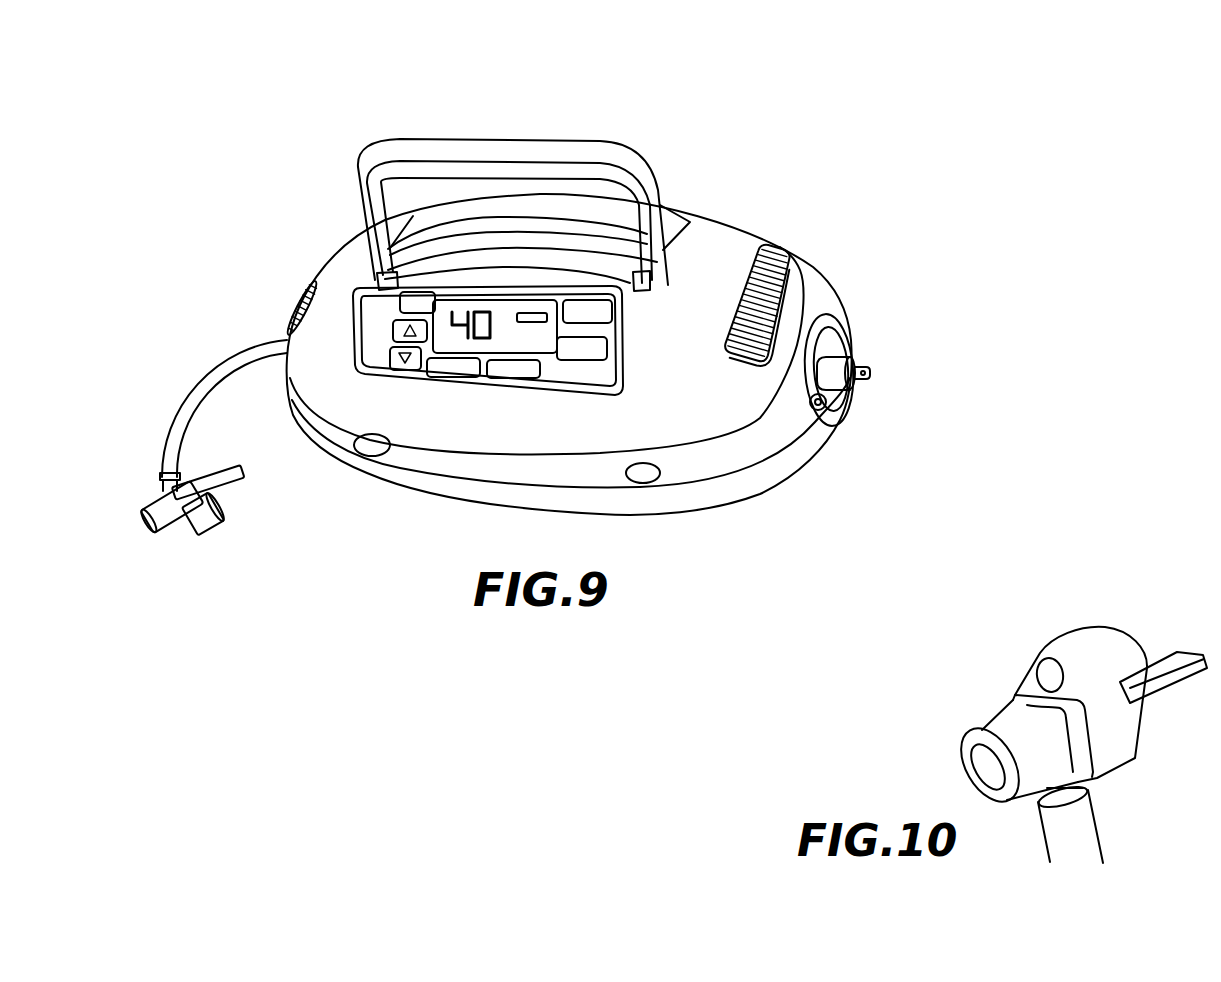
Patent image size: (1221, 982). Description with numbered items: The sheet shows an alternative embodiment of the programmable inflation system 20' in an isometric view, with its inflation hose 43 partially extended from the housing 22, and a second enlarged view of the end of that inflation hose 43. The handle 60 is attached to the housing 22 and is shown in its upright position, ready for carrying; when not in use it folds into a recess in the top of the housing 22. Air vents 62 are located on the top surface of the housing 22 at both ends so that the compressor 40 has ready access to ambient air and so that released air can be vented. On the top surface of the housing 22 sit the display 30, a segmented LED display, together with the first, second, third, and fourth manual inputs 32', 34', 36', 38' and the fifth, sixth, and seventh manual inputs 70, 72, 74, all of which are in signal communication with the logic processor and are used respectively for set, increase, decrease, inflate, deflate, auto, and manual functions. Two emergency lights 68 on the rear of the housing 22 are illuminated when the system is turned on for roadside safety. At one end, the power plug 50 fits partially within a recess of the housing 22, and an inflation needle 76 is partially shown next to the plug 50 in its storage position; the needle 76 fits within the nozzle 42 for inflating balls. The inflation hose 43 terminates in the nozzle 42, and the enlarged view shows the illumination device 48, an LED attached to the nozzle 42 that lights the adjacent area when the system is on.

In FIG. 9, the programmable inflation system 20' is at (160, 181).
In FIG. 9, the housing 22 is at (722, 223).
In FIG. 9, the display 30 is at (537, 343).
In FIG. 9, the first manual input 32' is at (376, 298).
In FIG. 9, the second manual input 34' is at (368, 328).
In FIG. 9, the third manual input 36' is at (362, 357).
In FIG. 9, the fourth manual input 38' is at (625, 317).
In FIG. 9, the compressor 40 is at (495, 326).
In FIG. 9, the nozzle 42 is at (157, 520).
In FIG. 10, the nozzle 42 is at (1137, 738).
In FIG. 9, the inflation hose 43 is at (197, 387).
In FIG. 9, the illumination device 48 is at (185, 525).
In FIG. 10, the illumination device 48 is at (1040, 653).
In FIG. 9, the power plug 50 is at (855, 357).
In FIG. 9, the handle 60 is at (613, 147).
In FIG. 9, the air vents 62 is at (777, 253).
In FIG. 9, the emergency lights 68 is at (370, 443).
In FIG. 9, the fifth manual input 70 is at (597, 345).
In FIG. 9, the sixth manual input 72 is at (447, 367).
In FIG. 9, the seventh manual input 74 is at (513, 370).
In FIG. 9, the inflation needle 76 is at (824, 404).